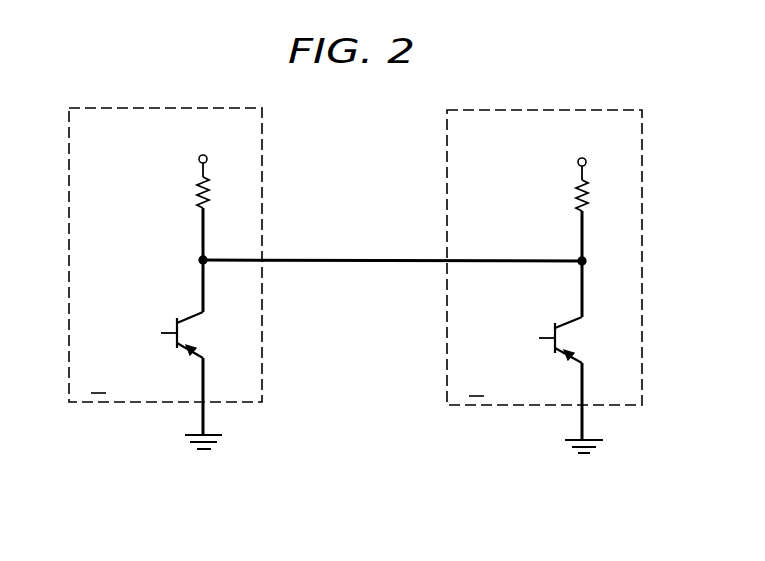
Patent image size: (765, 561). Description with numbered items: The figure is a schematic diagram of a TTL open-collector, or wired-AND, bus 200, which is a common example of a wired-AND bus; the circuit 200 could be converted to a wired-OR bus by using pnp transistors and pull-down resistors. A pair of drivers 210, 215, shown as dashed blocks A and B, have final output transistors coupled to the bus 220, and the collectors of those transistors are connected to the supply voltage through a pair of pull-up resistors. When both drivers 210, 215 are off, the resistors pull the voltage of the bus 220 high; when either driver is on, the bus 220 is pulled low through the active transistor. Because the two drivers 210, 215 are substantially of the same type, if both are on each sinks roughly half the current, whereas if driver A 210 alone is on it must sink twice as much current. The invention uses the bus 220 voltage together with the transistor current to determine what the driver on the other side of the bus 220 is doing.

The TTL open-collector bus 200 is at (390, 454).
The driver A 210 is at (262, 338).
The driver B 215 is at (642, 342).
The bus 220 is at (358, 262).